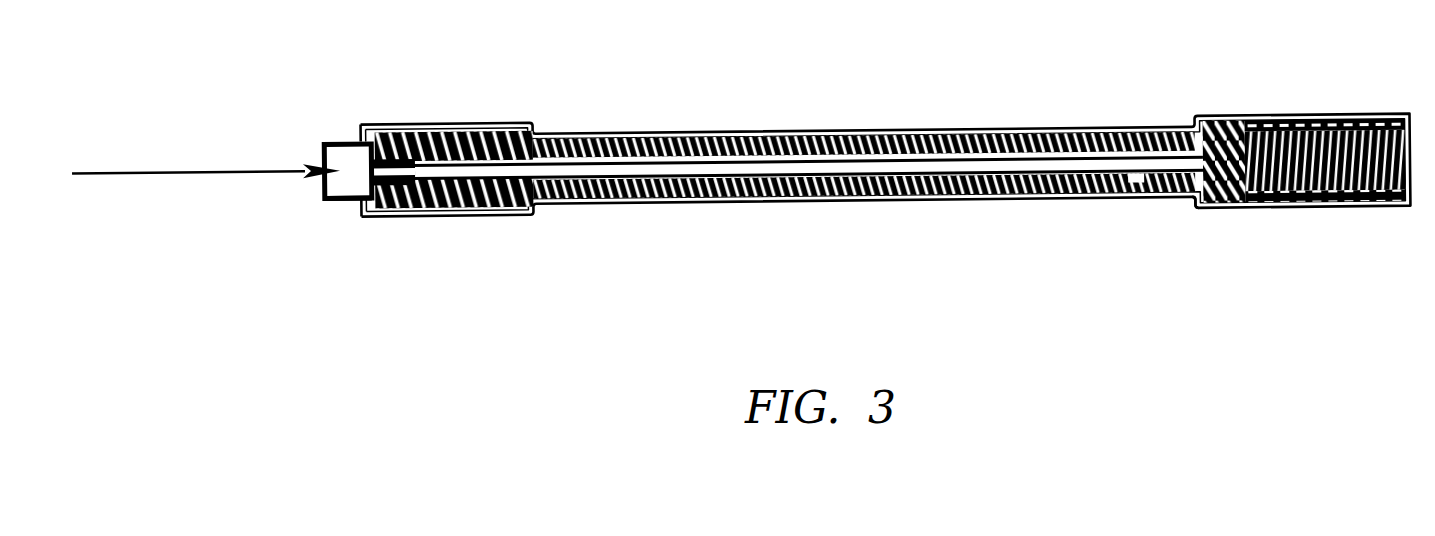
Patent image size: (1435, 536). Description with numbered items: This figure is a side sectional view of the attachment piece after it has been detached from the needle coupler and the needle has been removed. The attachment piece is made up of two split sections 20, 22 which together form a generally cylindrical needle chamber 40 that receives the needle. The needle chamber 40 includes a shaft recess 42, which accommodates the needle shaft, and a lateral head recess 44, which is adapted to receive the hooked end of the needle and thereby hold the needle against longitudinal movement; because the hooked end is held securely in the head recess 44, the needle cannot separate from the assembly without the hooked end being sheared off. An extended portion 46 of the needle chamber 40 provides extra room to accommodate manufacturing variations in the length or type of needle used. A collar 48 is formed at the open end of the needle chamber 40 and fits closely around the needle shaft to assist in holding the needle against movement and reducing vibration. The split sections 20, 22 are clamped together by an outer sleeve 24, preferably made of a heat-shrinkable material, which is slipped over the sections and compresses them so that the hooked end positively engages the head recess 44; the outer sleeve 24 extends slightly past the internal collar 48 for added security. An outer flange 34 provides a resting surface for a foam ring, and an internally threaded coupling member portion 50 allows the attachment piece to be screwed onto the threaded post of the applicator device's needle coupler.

The split section 20 is at (348, 144).
The split section 22 is at (344, 197).
The outer sleeve 24 is at (685, 130).
The outer flange 34 is at (1213, 118).
The needle chamber 40 is at (206, 157).
The shaft recess 42 is at (663, 163).
The lateral head recess 44 is at (1134, 176).
The extended portion 46 is at (1193, 210).
The collar 48 is at (404, 128).
The coupling member portion 50 is at (1345, 118).